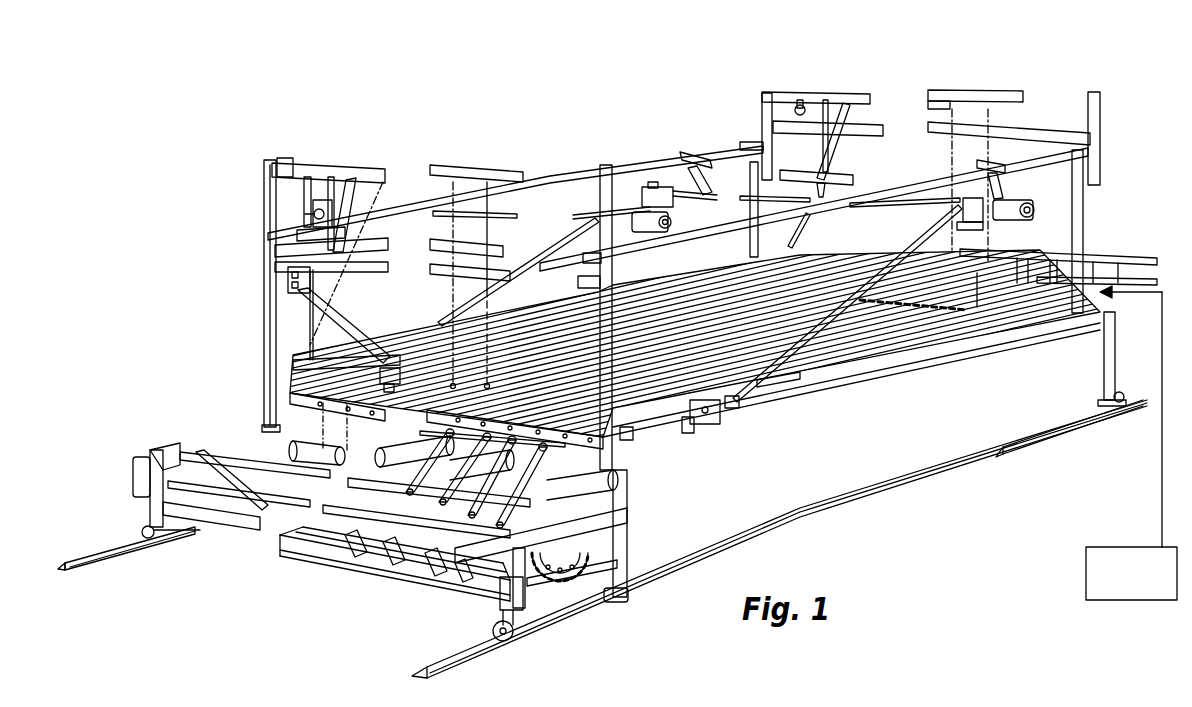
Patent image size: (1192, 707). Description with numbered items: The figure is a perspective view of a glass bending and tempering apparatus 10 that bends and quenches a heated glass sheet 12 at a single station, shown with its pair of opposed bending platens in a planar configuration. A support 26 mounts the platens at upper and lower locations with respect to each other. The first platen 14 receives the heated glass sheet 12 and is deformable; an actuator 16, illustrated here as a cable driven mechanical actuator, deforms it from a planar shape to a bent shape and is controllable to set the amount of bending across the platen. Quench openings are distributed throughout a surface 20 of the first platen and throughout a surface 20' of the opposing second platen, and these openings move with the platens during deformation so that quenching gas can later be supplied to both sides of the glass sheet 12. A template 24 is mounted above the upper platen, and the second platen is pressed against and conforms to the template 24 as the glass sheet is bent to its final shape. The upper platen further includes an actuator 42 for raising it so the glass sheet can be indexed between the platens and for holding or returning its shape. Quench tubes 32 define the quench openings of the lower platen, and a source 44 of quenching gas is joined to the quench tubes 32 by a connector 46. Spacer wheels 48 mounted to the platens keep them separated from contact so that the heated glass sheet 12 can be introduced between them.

The glass bending and tempering apparatus 10 is at (1036, 70).
The glass sheet 12 is at (1120, 263).
The first platen 14 is at (1110, 291).
The actuator 16 is at (422, 543).
The surface of the platen 20 is at (695, 332).
The surface of the second platen 20' is at (1105, 231).
The template 24 is at (308, 305).
The support 26 is at (897, 193).
The quench tubes 32 is at (847, 393).
The actuator 42 is at (393, 208).
The source of quenching gas 44 is at (1090, 570).
The connector 46 is at (1162, 477).
The spacer wheels 48 is at (390, 381).